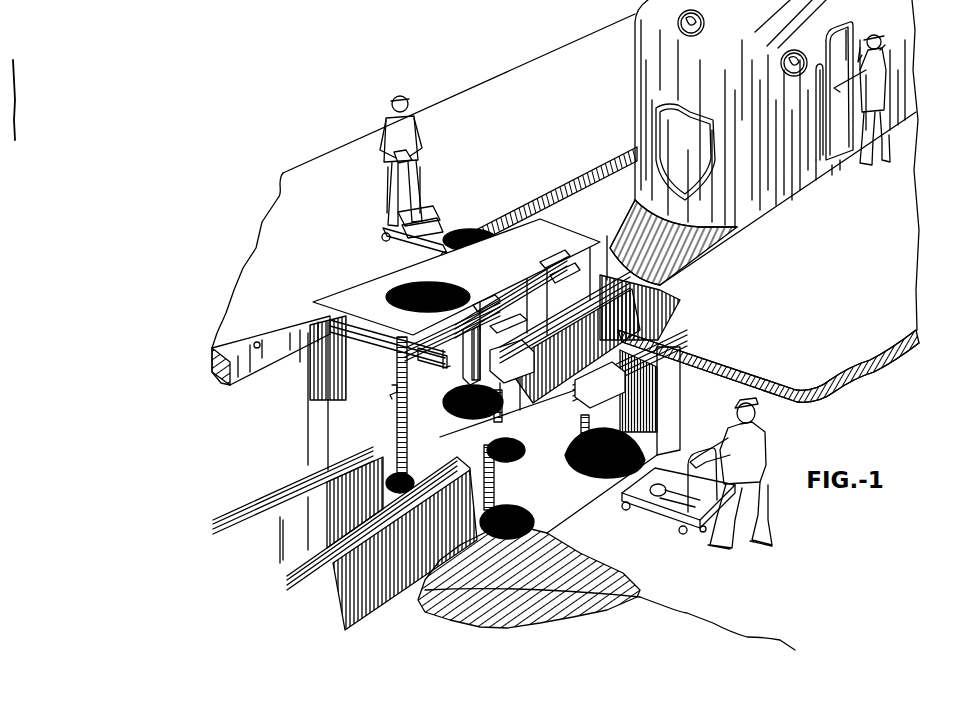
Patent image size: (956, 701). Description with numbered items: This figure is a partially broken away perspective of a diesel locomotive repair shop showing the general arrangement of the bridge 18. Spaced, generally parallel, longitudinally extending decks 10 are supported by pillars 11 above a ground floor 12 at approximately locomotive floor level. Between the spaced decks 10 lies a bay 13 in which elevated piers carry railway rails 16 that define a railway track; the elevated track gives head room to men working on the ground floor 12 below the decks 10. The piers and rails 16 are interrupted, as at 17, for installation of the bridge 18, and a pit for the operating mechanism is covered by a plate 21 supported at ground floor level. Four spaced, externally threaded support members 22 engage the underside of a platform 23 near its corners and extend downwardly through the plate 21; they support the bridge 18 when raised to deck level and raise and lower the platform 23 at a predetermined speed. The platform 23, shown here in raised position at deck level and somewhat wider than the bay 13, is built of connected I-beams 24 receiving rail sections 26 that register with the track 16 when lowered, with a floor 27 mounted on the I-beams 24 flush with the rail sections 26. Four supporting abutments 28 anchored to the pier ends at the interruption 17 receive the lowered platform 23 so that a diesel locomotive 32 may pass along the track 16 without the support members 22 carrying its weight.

The deck 10 is at (802, 277).
The pillar 11 is at (530, 232).
The ground floor 12 is at (734, 593).
The bay 13 is at (580, 226).
The railway rail 16 is at (601, 278).
The interruption 17 is at (383, 434).
The bridge 18 is at (363, 297).
The plate 21 is at (547, 505).
The support member 22 is at (408, 453).
The platform 23 is at (404, 283).
The I-beam 24 is at (428, 356).
The rail section 26 is at (541, 260).
The floor 27 is at (383, 330).
The supporting abutment 28 is at (613, 402).
The diesel locomotive 32 is at (647, 134).